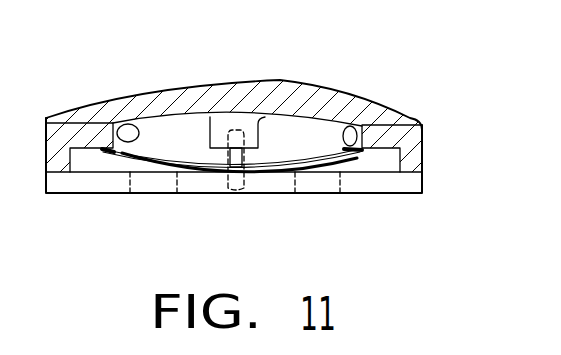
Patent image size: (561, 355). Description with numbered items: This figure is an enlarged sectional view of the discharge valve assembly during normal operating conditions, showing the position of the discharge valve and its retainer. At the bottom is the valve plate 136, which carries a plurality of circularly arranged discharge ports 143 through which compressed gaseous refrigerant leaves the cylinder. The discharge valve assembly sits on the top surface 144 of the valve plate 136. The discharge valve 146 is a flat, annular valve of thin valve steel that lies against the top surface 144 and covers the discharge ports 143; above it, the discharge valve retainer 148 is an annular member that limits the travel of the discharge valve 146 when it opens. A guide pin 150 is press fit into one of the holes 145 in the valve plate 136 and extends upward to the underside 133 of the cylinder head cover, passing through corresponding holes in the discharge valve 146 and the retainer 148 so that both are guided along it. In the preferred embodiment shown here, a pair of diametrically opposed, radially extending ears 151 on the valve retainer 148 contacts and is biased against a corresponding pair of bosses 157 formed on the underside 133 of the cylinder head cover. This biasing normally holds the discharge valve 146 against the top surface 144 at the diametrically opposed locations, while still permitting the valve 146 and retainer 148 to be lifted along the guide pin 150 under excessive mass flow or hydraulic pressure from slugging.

The underside 133 is at (185, 88).
The valve plate 136 is at (428, 182).
The discharge ports 143 is at (131, 181).
The top surface 144 is at (92, 161).
The holes 145 is at (228, 185).
The discharge valve 146 is at (356, 161).
The discharge valve retainer 148 is at (336, 122).
The guide pin 150 is at (246, 160).
The ears 151 is at (364, 152).
The bosses 157 is at (137, 123).